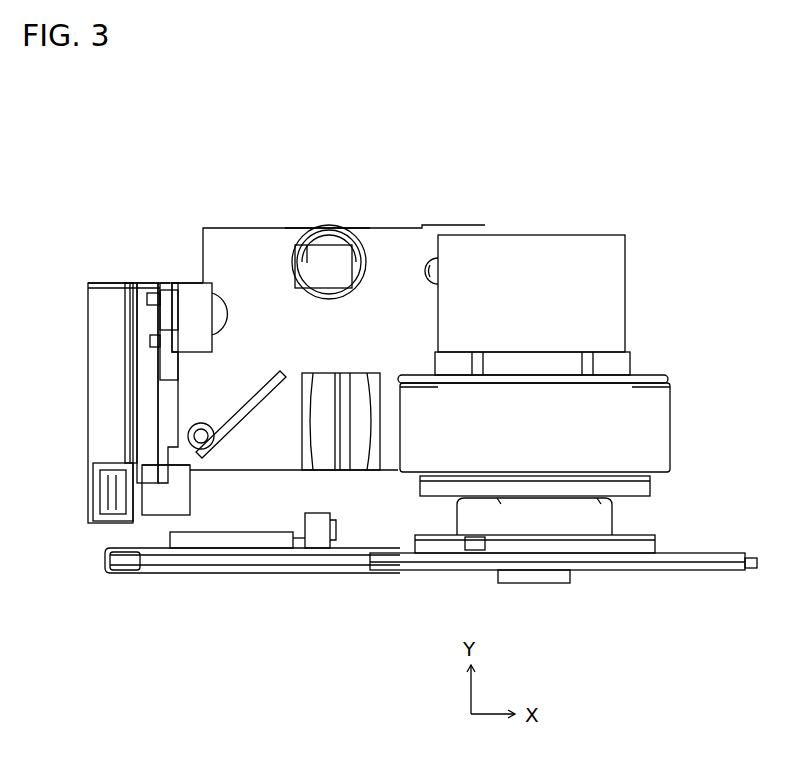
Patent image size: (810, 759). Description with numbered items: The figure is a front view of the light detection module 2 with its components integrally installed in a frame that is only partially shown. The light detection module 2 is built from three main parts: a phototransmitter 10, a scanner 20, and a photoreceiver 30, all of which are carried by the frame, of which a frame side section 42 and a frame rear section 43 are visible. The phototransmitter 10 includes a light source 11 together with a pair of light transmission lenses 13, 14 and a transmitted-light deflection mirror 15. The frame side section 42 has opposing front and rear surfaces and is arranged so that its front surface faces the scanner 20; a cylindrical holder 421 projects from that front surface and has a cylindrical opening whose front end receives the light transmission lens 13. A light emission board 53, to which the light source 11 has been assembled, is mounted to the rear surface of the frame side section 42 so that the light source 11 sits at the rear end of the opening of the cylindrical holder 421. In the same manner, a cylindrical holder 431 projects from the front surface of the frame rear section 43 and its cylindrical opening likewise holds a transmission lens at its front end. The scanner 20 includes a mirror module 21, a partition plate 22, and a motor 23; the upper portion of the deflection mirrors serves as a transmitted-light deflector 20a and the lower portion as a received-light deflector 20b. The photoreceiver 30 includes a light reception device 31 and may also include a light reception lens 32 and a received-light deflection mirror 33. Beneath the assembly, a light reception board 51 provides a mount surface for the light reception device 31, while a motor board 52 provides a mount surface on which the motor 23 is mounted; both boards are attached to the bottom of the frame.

The light detection module 2 is at (590, 99).
The phototransmitter 10 is at (145, 163).
The light source 11 is at (140, 320).
The light transmission lens 13 is at (220, 300).
The light transmission lens 14 is at (335, 240).
The transmitted-light deflection mirror 15 is at (300, 238).
The scanner 20 is at (555, 202).
The transmitted-light deflector 20a is at (608, 303).
The received-light deflector 20b is at (640, 426).
The mirror module 21 is at (584, 257).
The partition plate 22 is at (660, 364).
The motor 23 is at (585, 520).
The photoreceiver 30 is at (248, 648).
The light reception device 31 is at (262, 542).
The light reception lens 32 is at (363, 445).
The received-light deflection mirror 33 is at (226, 488).
The frame side section 42 is at (157, 284).
The frame rear section 43 is at (262, 253).
The light reception board 51 is at (162, 572).
The motor board 52 is at (650, 573).
The light emission board 53 is at (135, 374).
The cylindrical holder 421 is at (190, 302).
The cylindrical holder 431 is at (350, 228).